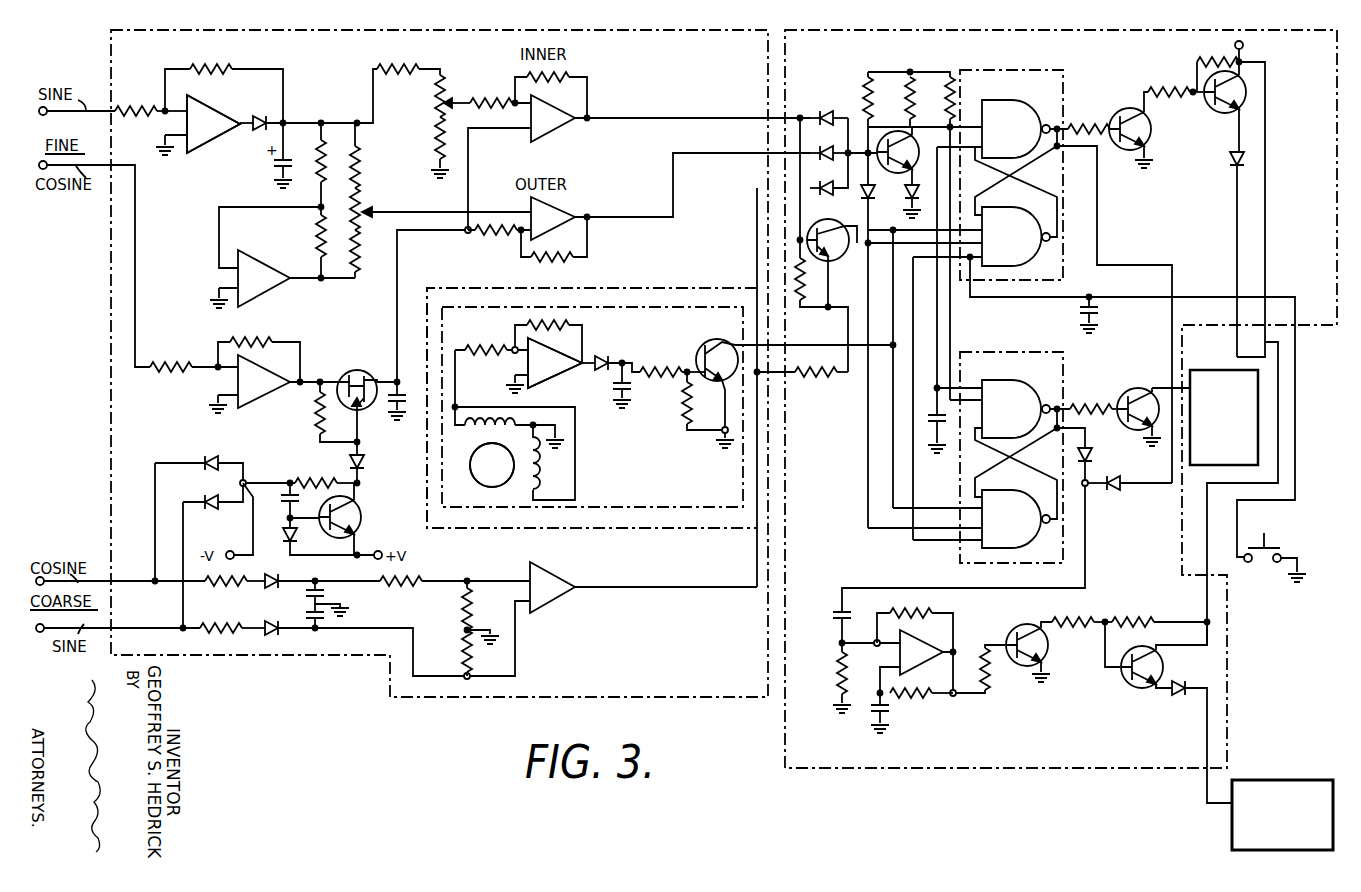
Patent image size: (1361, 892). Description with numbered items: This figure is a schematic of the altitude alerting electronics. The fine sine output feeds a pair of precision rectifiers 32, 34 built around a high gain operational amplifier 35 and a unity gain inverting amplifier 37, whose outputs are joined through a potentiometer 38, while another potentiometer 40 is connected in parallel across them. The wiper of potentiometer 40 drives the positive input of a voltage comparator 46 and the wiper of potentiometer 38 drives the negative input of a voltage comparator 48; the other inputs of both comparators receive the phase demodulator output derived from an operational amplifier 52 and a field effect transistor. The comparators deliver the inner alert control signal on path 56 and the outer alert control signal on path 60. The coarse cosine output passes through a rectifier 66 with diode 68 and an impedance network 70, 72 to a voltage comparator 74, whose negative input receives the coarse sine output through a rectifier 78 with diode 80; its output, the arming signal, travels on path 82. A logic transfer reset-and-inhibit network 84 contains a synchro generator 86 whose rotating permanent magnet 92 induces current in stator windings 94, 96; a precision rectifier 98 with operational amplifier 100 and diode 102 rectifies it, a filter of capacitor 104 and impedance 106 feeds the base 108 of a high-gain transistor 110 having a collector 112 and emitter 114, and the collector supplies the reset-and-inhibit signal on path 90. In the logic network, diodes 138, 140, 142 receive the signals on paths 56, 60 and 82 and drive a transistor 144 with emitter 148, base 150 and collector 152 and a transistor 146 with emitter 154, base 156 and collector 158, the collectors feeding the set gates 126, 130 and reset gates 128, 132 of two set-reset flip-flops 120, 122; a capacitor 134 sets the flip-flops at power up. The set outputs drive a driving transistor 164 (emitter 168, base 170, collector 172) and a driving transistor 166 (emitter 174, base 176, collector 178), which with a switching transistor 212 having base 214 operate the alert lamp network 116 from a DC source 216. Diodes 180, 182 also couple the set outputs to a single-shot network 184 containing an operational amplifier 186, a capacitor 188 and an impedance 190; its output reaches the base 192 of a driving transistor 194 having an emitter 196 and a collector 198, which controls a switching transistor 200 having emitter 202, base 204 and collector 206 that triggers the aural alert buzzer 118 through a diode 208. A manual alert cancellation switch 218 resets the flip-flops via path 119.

The high impedance precision rectifier 32 is at (197, 248).
The high impedance precision rectifier 34 is at (203, 145).
The high gain operational amplifier 35 is at (214, 112).
The unity gain inverting amplifier 37 is at (262, 253).
The potentiometer 38 is at (366, 200).
The potentiometer 40 is at (428, 106).
The voltage comparator 46 is at (545, 135).
The voltage comparator 48 is at (569, 205).
The operational amplifier 52 is at (258, 395).
The path 56 is at (690, 116).
The path 60 is at (706, 154).
The rectifier 66 is at (286, 579).
The diode 68 is at (264, 590).
The impedance network 70 is at (401, 593).
The impedance network 72 is at (462, 602).
The voltage comparator 74 is at (547, 606).
The rectifier 78 is at (295, 636).
The diode 80 is at (264, 632).
The path 82 is at (660, 588).
The logic transfer reset-and-inhibit network 84 is at (427, 493).
The synchro generator 86 is at (481, 487).
The path 90 is at (822, 342).
The permanent magnet 92 is at (490, 488).
The stator winding 94 is at (482, 418).
The stator winding 96 is at (538, 457).
The precision rectifier 98 is at (538, 376).
The operational amplifier 100 is at (555, 363).
The diode 102 is at (603, 357).
The capacitor 104 is at (631, 396).
The impedance 106 is at (662, 370).
The base 108 is at (706, 401).
The high-gain transistor 110 is at (704, 350).
The collector 112 is at (742, 345).
The emitter 114 is at (721, 433).
The alert lamp network 116 is at (1224, 417).
The aural alert buzzer 118 is at (1280, 780).
The path 119 is at (1288, 460).
The set-reset flip-flop 120 is at (1063, 86).
The set-reset flip-flop 122 is at (1065, 366).
The set NAND gate 126 is at (1010, 105).
The reset NAND gate 128 is at (1005, 213).
The set NAND gate 130 is at (1022, 386).
The reset NAND gate 132 is at (1015, 541).
The capacitor 134 is at (930, 425).
The diode 138 is at (822, 112).
The diode 140 is at (805, 148).
The diode 142 is at (805, 186).
The transistor 144 is at (910, 172).
The transistor 146 is at (866, 205).
The emitter 148 is at (897, 202).
The base 150 is at (886, 128).
The collector 152 is at (926, 102).
The emitter 154 is at (806, 236).
The base 156 is at (828, 284).
The collector 158 is at (832, 258).
The driving transistor 164 is at (1152, 125).
The driving transistor 166 is at (1133, 388).
The emitter 168 is at (1150, 158).
The base 170 is at (1105, 124).
The collector 172 is at (1150, 97).
The emitter 174 is at (1146, 433).
The base 176 is at (1122, 403).
The collector 178 is at (1147, 387).
The diode 180 is at (1127, 499).
The diode 182 is at (1096, 457).
The single-shot network 184 is at (910, 707).
The operational amplifier 186 is at (909, 637).
The capacitor 188 is at (838, 612).
The impedance 190 is at (838, 676).
The base 192 is at (1014, 662).
The driving transistor 194 is at (1012, 623).
The emitter lead 196 is at (1042, 660).
The collector 198 is at (1056, 620).
The switching transistor 200 is at (1131, 690).
The emitter 202 is at (1150, 645).
The base 204 is at (1120, 683).
The collector 206 is at (1156, 688).
The diode 208 is at (1178, 684).
The switching transistor 212 is at (1247, 92).
The base 214 is at (1231, 113).
The DC source 216 is at (1235, 45).
The manual alert cancellation switch 218 is at (1265, 567).